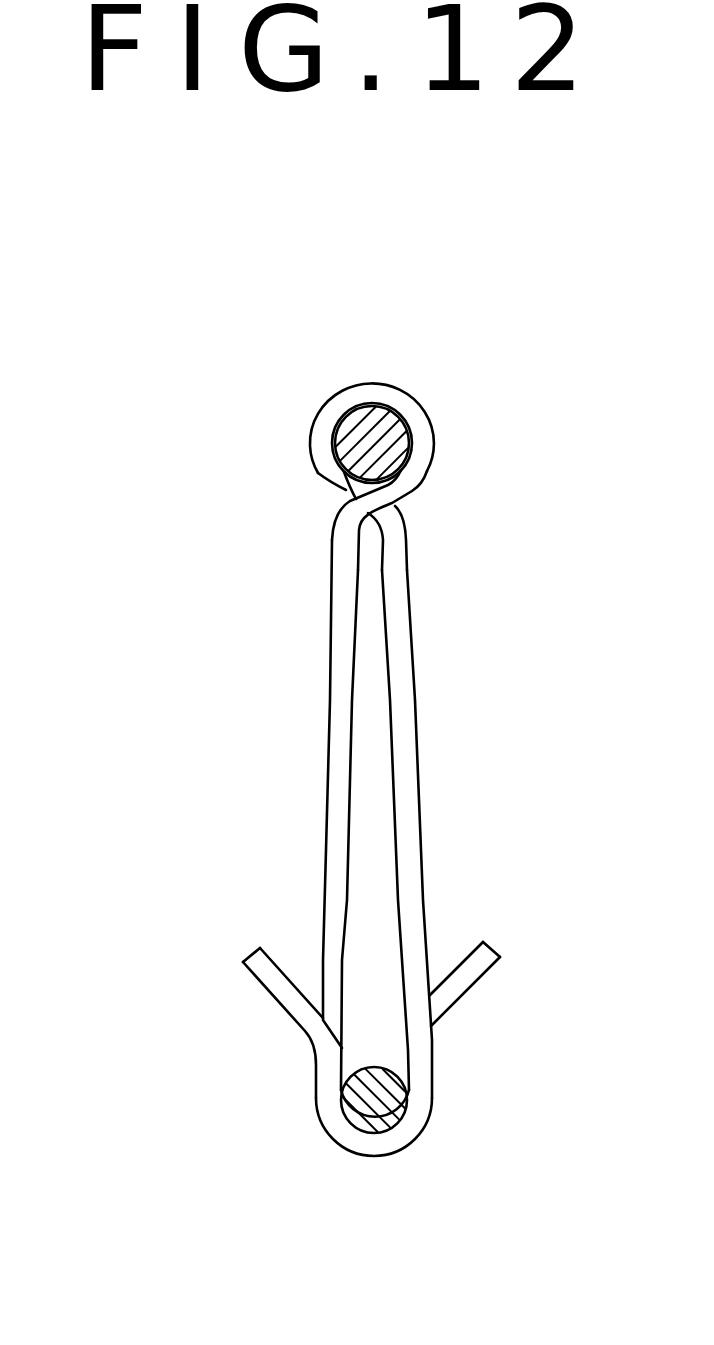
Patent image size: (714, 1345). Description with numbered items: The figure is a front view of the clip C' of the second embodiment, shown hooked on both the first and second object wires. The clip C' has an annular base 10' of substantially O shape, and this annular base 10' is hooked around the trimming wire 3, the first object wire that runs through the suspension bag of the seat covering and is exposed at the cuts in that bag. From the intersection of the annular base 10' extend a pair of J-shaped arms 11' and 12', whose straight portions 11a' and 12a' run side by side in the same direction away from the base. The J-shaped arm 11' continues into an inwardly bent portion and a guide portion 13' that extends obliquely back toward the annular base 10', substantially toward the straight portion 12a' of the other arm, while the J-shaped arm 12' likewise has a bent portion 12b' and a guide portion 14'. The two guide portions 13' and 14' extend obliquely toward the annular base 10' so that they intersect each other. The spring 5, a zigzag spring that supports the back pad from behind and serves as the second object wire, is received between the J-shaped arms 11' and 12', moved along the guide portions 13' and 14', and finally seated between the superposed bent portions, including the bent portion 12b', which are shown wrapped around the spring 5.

The annular base 10' is at (314, 422).
The trimming wire 3 is at (370, 430).
The clip C' is at (289, 533).
The J-shaped arm 11' is at (222, 794).
The straight portion 11a' is at (236, 830).
The J-shaped arm 12' is at (486, 830).
The straight portion 12a' is at (530, 834).
The bent portion 12b' is at (333, 1193).
The guide portion 13' is at (536, 929).
The guide portion 14' is at (188, 998).
The spring 5 is at (397, 1130).